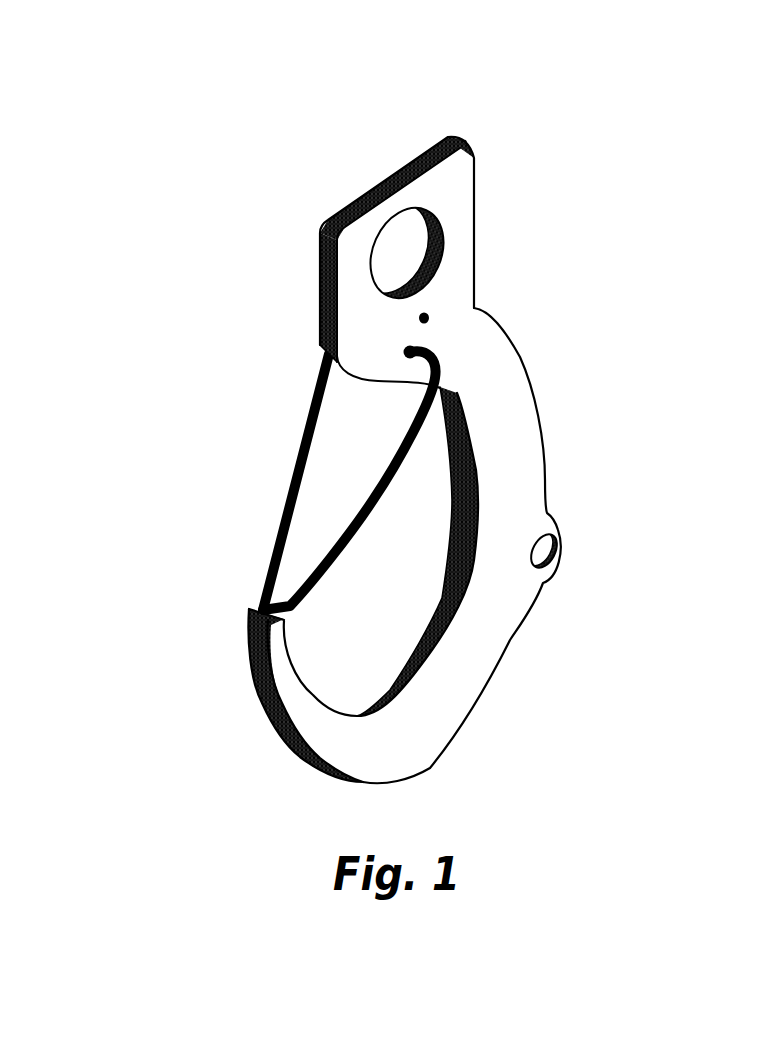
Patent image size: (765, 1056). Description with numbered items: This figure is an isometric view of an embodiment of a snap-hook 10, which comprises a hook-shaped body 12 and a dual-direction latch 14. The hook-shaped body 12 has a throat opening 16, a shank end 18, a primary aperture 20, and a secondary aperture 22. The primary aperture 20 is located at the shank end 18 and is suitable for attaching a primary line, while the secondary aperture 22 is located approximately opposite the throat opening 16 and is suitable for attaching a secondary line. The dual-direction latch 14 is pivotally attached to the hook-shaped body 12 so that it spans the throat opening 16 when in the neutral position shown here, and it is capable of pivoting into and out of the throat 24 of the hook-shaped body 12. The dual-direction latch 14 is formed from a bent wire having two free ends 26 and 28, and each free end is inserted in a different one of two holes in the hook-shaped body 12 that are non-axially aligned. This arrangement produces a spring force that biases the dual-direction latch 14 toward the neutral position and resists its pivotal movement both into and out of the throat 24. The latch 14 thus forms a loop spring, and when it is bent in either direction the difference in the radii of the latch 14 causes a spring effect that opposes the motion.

The snap-hook 10 is at (152, 88).
The hook-shaped body 12 is at (450, 738).
The dual-direction latch 14 is at (297, 477).
The throat opening 16 is at (293, 362).
The shank end 18 is at (502, 217).
The primary aperture 20 is at (401, 214).
The secondary aperture 22 is at (547, 534).
The throat 24 is at (378, 590).
The free end 26 is at (430, 319).
The free end 28 is at (418, 352).